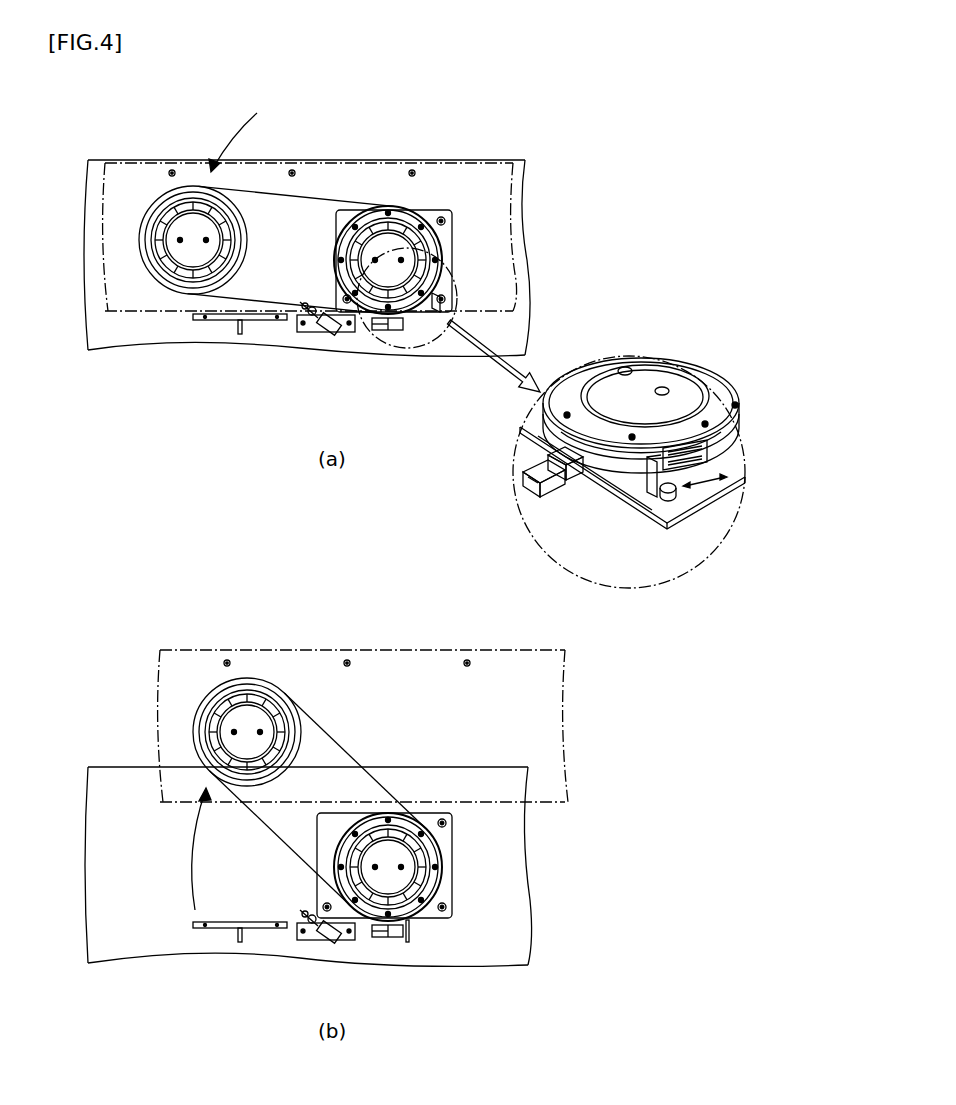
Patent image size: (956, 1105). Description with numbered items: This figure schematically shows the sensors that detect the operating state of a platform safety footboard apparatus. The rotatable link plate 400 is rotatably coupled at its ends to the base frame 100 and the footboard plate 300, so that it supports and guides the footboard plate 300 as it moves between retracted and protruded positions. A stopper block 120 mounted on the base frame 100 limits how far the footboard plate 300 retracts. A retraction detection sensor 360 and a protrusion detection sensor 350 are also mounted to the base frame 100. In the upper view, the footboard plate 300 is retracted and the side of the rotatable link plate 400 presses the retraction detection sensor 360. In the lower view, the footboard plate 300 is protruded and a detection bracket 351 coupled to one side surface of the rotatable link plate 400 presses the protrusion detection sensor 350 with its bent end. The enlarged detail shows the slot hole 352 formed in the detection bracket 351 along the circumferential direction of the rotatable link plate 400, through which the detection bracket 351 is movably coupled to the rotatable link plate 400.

The base frame 100 is at (522, 158).
The footboard plate 300 is at (103, 190).
The rotatable link plate 400 is at (313, 195).
The stopper block 120 is at (220, 320).
The retraction detection sensor 360 is at (310, 332).
The protrusion detection sensor 350 is at (395, 330).
The detection bracket 351 is at (440, 300).
The slot hole 352 is at (700, 470).